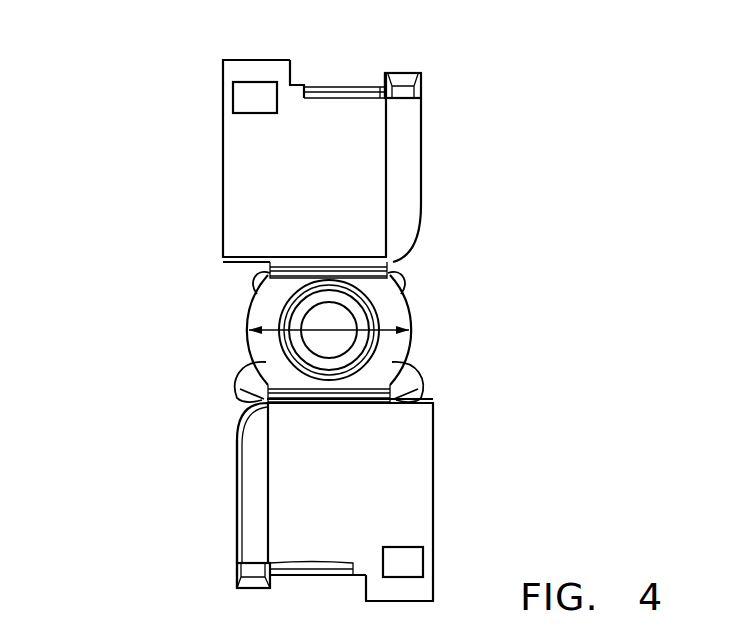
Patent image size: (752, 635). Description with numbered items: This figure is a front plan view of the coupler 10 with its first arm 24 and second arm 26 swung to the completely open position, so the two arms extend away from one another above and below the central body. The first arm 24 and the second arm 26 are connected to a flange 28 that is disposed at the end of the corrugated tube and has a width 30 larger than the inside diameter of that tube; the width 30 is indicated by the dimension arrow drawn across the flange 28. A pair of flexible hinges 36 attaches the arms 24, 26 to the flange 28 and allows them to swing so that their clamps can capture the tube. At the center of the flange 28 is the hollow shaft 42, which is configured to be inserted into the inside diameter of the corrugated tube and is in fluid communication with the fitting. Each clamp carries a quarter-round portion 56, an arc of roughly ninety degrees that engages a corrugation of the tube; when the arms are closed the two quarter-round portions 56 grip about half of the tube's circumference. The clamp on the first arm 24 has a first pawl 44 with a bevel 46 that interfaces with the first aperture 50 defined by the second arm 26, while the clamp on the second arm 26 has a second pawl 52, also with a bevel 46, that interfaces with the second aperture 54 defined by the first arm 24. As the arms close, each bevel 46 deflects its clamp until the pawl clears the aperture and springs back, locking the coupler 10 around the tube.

The coupler 10 is at (128, 44).
The first arm 24 is at (238, 175).
The second arm 26 is at (412, 450).
The flange 28 is at (258, 316).
The width 30 is at (398, 345).
The flexible hinges 36 is at (257, 272).
The hollow shaft 42 is at (368, 305).
The first pawl 44 is at (421, 93).
The bevel 46 is at (404, 80).
The first aperture 50 is at (405, 557).
The second pawl 52 is at (245, 568).
The second aperture 54 is at (245, 97).
The quarter-round portion 56 is at (363, 90).